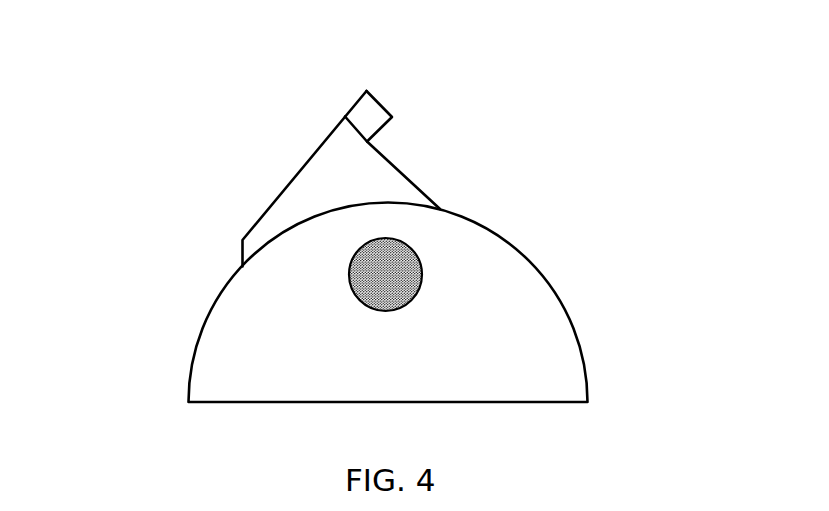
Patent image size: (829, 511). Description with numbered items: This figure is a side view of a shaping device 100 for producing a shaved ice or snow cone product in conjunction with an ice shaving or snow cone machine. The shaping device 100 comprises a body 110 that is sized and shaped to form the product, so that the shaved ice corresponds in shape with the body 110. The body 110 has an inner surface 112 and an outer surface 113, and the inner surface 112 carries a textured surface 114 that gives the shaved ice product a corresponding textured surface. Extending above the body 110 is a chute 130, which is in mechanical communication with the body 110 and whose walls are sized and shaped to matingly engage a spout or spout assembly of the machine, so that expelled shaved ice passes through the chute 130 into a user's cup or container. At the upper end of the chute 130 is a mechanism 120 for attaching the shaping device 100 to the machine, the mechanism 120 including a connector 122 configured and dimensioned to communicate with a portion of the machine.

The shaping device 100 is at (197, 232).
The body 110 is at (578, 340).
The inner surface 112 is at (530, 266).
The outer surface 113 is at (563, 302).
The textured surface 114 is at (385, 275).
The mechanism 120 is at (376, 95).
The connector 122 is at (373, 120).
The chute 130 is at (270, 198).